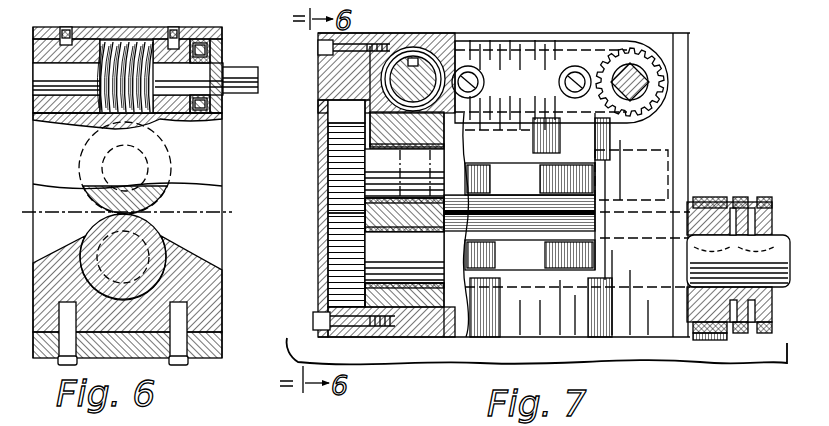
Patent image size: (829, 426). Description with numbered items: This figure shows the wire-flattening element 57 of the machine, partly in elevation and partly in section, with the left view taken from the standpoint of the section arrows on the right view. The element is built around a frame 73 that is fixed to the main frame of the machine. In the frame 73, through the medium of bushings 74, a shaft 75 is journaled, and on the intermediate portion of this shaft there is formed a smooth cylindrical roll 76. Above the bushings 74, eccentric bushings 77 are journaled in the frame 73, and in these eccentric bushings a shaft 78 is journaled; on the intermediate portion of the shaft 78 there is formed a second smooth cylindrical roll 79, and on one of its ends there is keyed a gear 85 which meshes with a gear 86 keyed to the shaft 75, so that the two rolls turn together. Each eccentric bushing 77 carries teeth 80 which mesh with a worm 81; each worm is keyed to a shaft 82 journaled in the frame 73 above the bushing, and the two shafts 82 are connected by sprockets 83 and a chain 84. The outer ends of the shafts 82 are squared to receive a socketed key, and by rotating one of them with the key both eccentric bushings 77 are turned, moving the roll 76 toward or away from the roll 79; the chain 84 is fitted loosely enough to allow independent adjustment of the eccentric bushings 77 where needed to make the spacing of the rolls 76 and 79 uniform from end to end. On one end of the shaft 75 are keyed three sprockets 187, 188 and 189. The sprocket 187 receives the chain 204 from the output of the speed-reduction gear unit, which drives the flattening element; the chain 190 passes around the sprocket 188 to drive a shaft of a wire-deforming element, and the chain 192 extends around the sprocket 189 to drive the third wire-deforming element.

In FIG. 6, the wire-flattening element 57 is at (224, 50).
In FIG. 7, the wire-flattening element 57 is at (670, 63).
In FIG. 7, the frame 73 is at (336, 89).
In FIG. 7, the bushings 74 is at (460, 296).
In FIG. 7, the shaft 75 is at (686, 285).
In FIG. 6, the smooth cylindrical roll 76 is at (150, 235).
In FIG. 7, the smooth cylindrical roll 76 is at (560, 233).
In FIG. 6, the eccentric bushings 77 is at (97, 133).
In FIG. 7, the eccentric bushings 77 is at (442, 138).
In FIG. 6, the shaft 78 is at (102, 168).
In FIG. 7, the shaft 78 is at (387, 170).
In FIG. 6, the smooth cylindrical roll 79 is at (88, 213).
In FIG. 7, the smooth cylindrical roll 79 is at (560, 206).
In FIG. 6, the teeth 80 is at (152, 102).
In FIG. 7, the teeth 80 is at (366, 210).
In FIG. 6, the worm 81 is at (210, 121).
In FIG. 7, the worm 81 is at (381, 78).
In FIG. 6, the shaft 82 is at (243, 71).
In FIG. 7, the shaft 82 is at (416, 47).
In FIG. 6, the sprockets 83 is at (208, 98).
In FIG. 7, the sprockets 83 is at (652, 55).
In FIG. 6, the chain 84 is at (201, 44).
In FIG. 7, the chain 84 is at (471, 110).
In FIG. 7, the gear 85 is at (342, 157).
In FIG. 7, the gear 86 is at (342, 270).
In FIG. 7, the sprocket 187 is at (701, 197).
In FIG. 7, the sprocket 188 is at (740, 197).
In FIG. 7, the sprocket 189 is at (762, 197).
In FIG. 7, the chain 190 is at (740, 335).
In FIG. 7, the chain 192 is at (762, 335).
In FIG. 7, the chain 204 is at (708, 340).